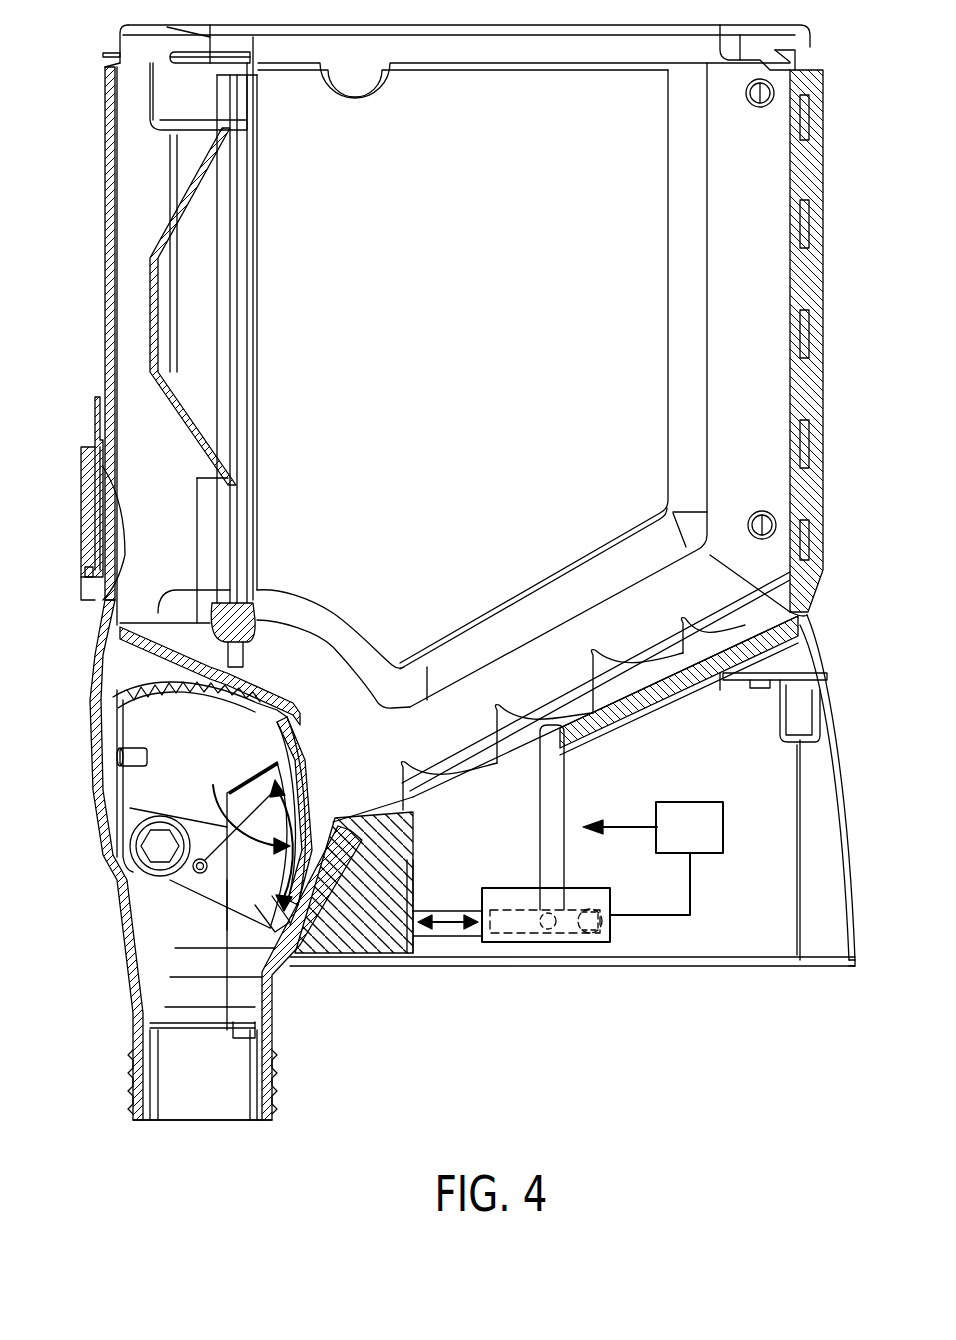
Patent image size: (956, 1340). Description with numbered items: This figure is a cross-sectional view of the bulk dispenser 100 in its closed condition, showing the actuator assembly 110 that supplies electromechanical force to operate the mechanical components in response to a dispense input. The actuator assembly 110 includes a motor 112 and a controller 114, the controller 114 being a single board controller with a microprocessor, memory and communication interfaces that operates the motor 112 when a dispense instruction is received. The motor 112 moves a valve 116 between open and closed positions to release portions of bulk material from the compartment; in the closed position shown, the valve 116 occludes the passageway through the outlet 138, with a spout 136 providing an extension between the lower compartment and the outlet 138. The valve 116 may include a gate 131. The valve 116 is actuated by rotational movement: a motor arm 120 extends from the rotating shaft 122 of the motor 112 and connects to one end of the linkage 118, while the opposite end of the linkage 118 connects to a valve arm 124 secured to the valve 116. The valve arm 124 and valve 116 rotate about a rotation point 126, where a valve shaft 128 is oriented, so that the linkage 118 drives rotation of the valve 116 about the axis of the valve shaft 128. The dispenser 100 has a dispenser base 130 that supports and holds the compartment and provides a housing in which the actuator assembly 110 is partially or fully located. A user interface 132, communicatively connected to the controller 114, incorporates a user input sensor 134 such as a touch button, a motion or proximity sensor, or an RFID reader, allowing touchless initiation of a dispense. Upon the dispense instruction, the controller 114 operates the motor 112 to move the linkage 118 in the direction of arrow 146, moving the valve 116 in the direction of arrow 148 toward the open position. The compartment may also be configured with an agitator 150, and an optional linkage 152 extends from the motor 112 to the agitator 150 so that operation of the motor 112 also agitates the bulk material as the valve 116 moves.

The dispenser 100 is at (847, 96).
The actuator assembly 110 is at (770, 878).
The motor 112 is at (612, 928).
The controller 114 is at (653, 858).
The valve 116 is at (258, 732).
The linkage 118 is at (447, 907).
The motor arm 120 is at (533, 937).
The rotating shaft 122 is at (598, 932).
The valve arm 124 is at (200, 878).
The rotation point 126 is at (160, 822).
The valve shaft 128 is at (145, 848).
The dispenser base 130 is at (803, 790).
The gate 131 is at (300, 804).
The user interface 132 is at (81, 447).
The user input sensor 134 is at (88, 598).
The spout 136 is at (145, 1018).
The outlet 138 is at (210, 1135).
The arrow 146 is at (435, 932).
The arrow 148 is at (239, 841).
The agitator 150 is at (513, 710).
The linkage 152 is at (556, 793).